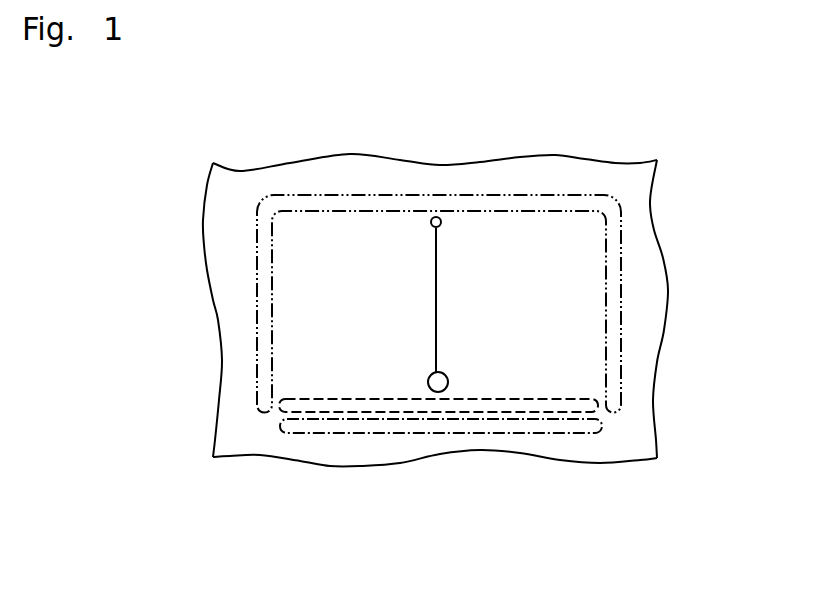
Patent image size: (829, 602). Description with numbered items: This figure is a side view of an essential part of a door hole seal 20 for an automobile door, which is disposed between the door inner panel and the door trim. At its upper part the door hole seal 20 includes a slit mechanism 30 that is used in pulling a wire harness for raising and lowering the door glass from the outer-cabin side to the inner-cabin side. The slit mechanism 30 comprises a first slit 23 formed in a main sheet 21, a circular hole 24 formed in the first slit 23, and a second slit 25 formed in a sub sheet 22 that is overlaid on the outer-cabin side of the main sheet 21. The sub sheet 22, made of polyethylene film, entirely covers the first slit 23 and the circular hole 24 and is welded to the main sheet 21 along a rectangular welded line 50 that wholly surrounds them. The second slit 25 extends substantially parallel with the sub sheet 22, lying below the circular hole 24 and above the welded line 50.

The door hole seal 20 is at (637, 145).
The slit mechanism 30 is at (558, 143).
The sub sheet 22 is at (220, 322).
The main sheet 21 is at (562, 308).
The first slit 23 is at (434, 297).
The circular hole 24 is at (428, 383).
The second slit 25 is at (492, 398).
The welded line 50 is at (620, 250).